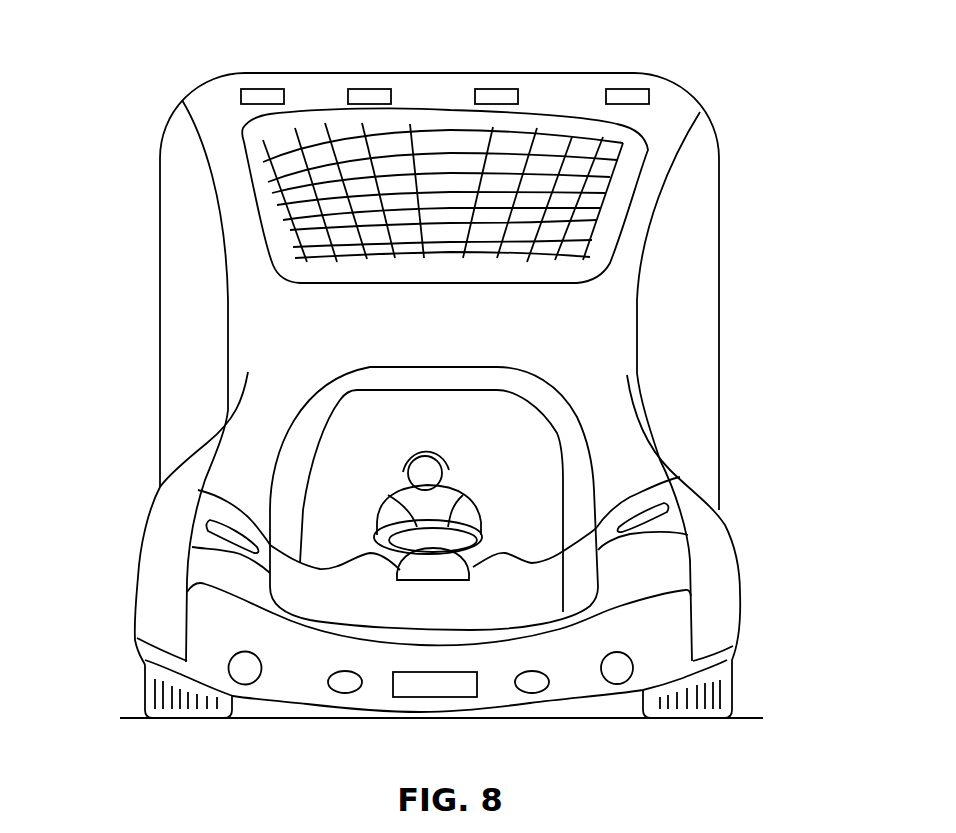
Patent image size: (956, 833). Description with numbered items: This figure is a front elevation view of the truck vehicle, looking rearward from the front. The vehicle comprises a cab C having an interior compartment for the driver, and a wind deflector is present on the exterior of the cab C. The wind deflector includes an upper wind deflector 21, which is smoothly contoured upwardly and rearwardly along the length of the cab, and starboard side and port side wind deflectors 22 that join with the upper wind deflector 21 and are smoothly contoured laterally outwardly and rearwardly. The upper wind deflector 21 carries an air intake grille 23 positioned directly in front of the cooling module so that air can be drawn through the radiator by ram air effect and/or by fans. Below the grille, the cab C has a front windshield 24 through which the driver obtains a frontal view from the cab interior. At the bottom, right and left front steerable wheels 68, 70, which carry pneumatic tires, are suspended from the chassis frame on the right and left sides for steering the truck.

The upper wind deflector 21 is at (415, 87).
The starboard side and port side wind deflectors 22 is at (160, 265).
The air intake grille 23 is at (260, 147).
The front windshield 24 is at (383, 412).
The cab C is at (590, 437).
The right front steerable wheel 68 is at (143, 692).
The left front steerable wheel 70 is at (728, 697).